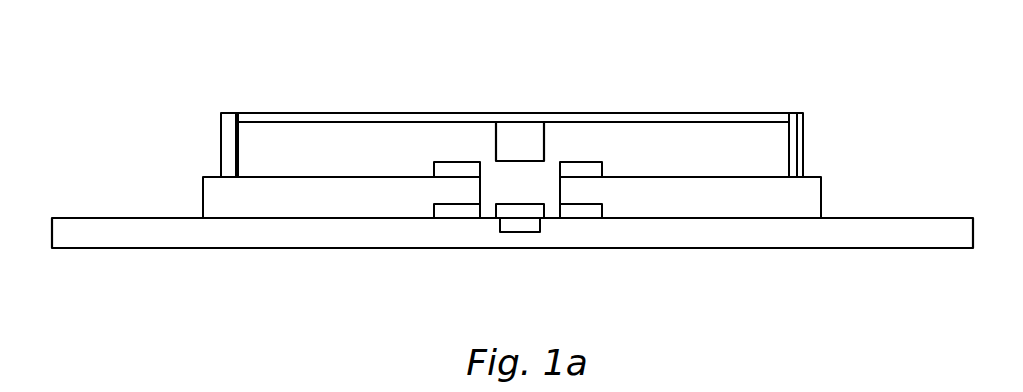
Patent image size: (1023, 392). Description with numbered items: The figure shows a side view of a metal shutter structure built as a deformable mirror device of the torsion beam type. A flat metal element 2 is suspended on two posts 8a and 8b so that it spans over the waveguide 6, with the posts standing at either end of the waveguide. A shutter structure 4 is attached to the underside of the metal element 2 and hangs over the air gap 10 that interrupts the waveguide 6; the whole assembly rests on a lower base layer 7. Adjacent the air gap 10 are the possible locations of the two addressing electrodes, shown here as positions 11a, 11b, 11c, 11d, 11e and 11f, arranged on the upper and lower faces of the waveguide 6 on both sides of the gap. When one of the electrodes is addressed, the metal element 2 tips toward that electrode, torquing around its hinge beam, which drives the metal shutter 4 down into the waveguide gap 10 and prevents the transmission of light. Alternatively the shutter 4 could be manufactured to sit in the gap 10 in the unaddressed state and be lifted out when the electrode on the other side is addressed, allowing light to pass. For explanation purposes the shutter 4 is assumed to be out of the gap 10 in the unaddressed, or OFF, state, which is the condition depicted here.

The metal element 2 is at (650, 115).
The shutter structure 4 is at (507, 125).
The waveguide 6 is at (818, 192).
The base plate 7 is at (937, 227).
The post 8a is at (805, 133).
The post 8b is at (222, 155).
The air gap 10 is at (495, 219).
The electrode position 11a is at (520, 225).
The electrode position 11b is at (545, 213).
The electrode position 11c is at (593, 210).
The electrode position 11d is at (447, 212).
The electrode position 11e is at (466, 163).
The electrode position 11f is at (581, 165).